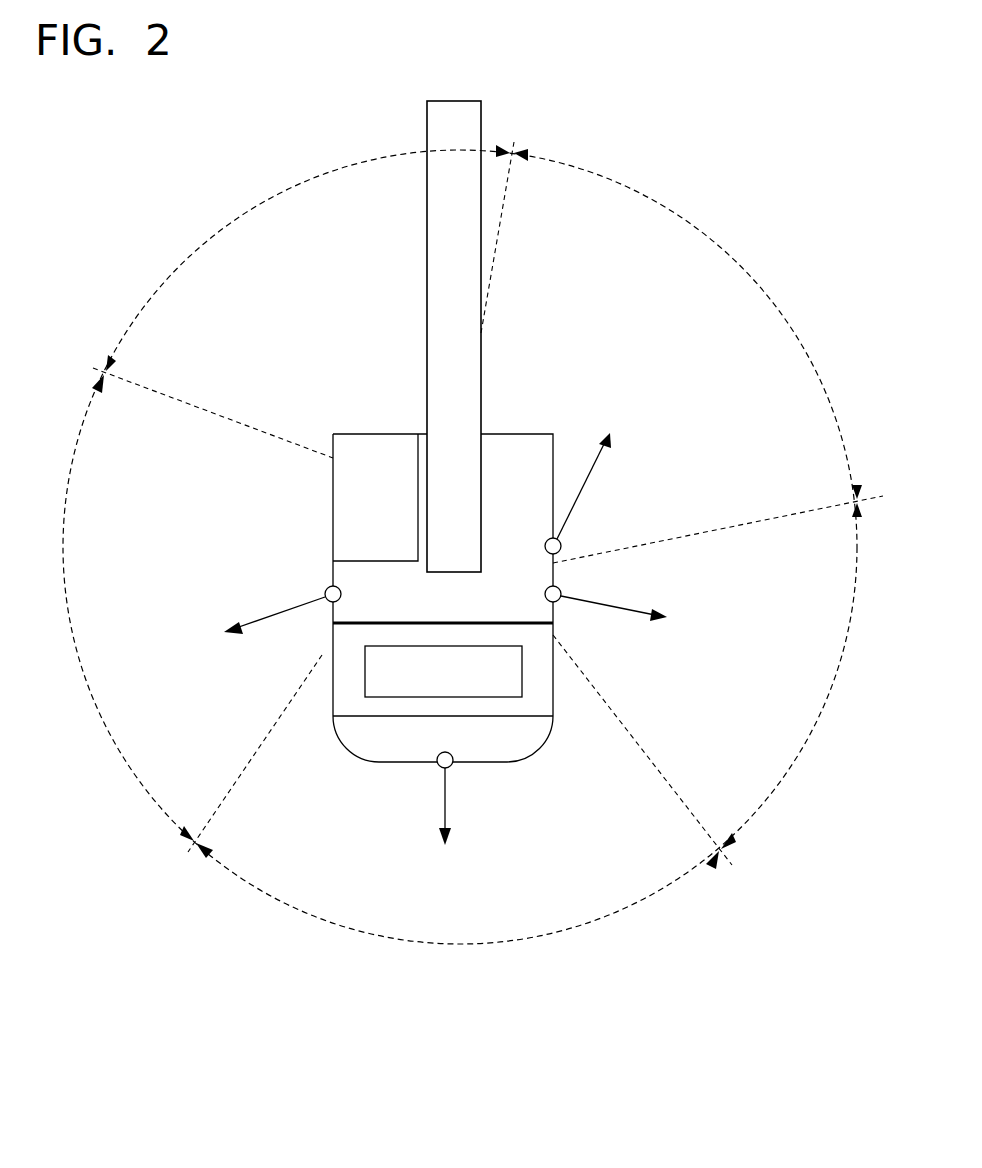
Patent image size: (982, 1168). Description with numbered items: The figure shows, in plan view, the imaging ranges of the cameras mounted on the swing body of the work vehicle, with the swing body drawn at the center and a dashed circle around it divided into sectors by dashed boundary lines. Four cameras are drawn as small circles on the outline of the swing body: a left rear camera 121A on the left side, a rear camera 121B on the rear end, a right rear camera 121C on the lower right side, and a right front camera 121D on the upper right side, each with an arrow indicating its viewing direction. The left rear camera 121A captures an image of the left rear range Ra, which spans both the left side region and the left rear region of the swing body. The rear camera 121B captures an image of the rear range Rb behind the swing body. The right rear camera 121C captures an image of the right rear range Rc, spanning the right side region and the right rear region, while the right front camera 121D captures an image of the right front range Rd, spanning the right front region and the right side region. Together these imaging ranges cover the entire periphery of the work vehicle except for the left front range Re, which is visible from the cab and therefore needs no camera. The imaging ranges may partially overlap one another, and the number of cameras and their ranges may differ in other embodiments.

The left rear camera 121A is at (326, 603).
The rear camera 121B is at (440, 767).
The right rear camera 121C is at (558, 598).
The right front camera 121D is at (562, 545).
The left rear range Ra is at (43, 615).
The rear range Rb is at (332, 817).
The right rear range Rc is at (721, 750).
The right front range Rd is at (718, 385).
The left front range Re is at (303, 300).